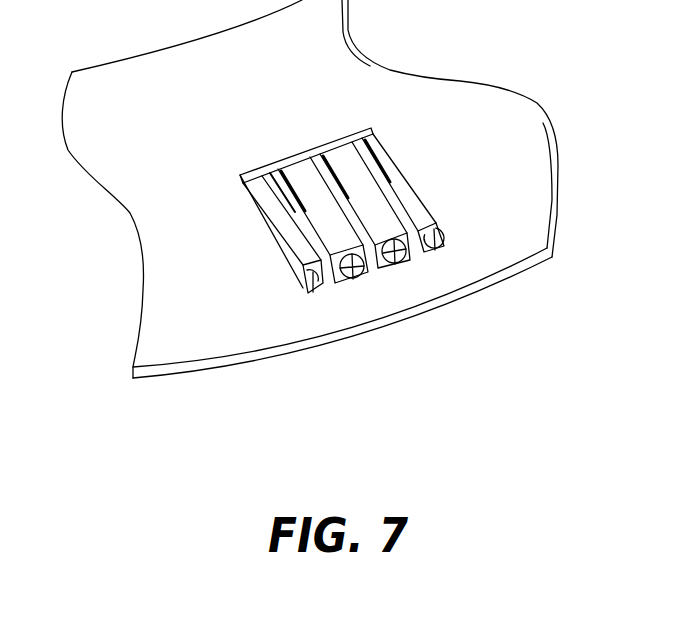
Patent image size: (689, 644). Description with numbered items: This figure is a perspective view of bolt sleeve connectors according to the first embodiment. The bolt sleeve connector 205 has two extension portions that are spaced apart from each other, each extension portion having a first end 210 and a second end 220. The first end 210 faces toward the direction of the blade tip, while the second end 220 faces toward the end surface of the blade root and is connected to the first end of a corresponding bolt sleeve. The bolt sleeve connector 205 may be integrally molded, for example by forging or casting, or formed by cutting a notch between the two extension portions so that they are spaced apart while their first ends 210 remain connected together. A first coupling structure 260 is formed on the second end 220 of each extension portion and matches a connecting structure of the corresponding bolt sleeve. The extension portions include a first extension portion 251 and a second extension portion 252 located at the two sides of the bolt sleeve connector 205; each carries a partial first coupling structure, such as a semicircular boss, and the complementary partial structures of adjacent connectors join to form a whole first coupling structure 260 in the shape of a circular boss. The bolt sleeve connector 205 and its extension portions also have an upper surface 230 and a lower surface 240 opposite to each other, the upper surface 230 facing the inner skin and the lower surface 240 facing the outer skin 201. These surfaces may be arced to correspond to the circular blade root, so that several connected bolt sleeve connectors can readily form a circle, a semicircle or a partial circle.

The outer skin 201 is at (310, 189).
The bolt sleeve connector 205 is at (430, 141).
The first end 210 is at (264, 246).
The second end 220 is at (335, 248).
The upper surface 230 is at (307, 205).
The lower surface 240 is at (297, 267).
The first extension portion 251 is at (257, 190).
The second extension portion 252 is at (415, 203).
The first coupling structure 260 is at (408, 260).